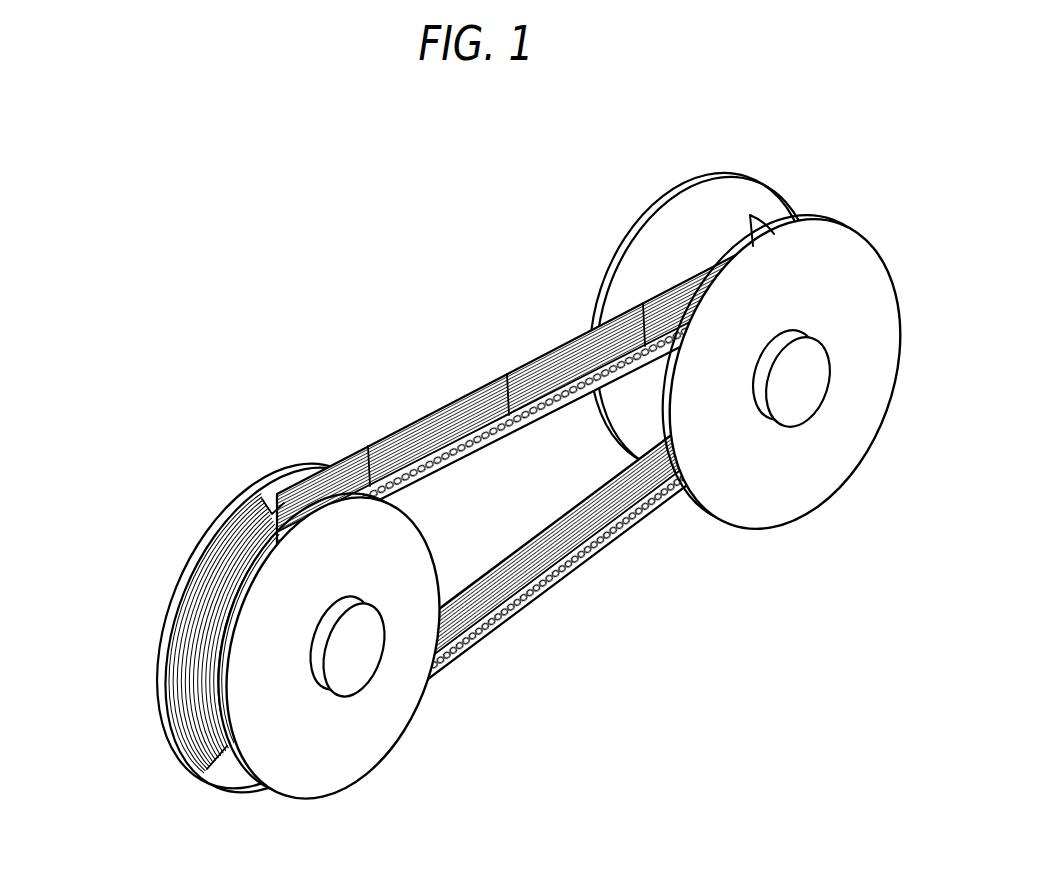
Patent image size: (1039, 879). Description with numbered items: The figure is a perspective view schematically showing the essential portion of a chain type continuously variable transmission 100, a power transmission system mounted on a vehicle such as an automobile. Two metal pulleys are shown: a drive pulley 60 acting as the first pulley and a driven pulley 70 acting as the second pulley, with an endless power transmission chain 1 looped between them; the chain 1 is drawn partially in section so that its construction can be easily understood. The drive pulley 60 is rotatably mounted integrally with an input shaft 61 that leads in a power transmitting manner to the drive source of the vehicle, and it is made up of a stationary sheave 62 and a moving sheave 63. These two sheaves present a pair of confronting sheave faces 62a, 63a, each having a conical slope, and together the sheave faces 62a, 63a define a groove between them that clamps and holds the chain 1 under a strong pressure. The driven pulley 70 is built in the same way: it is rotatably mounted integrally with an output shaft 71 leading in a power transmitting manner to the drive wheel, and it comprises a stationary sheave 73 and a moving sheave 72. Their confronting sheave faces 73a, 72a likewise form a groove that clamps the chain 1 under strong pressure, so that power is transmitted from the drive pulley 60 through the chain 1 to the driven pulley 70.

The power transmission chain 1 is at (480, 393).
The continuously variable transmission 100 is at (772, 133).
The drive pulley 60 is at (117, 527).
The input shaft 61 is at (347, 680).
The stationary sheave 62 is at (204, 548).
The sheave face 62a is at (280, 482).
The moving sheave 63 is at (253, 598).
The sheave face 63a is at (211, 766).
The driven pulley 70 is at (967, 160).
The output shaft 71 is at (793, 408).
The moving sheave 72 is at (736, 176).
The sheave face 72a is at (673, 243).
The stationary sheave 73 is at (828, 222).
The sheave face 73a is at (753, 220).